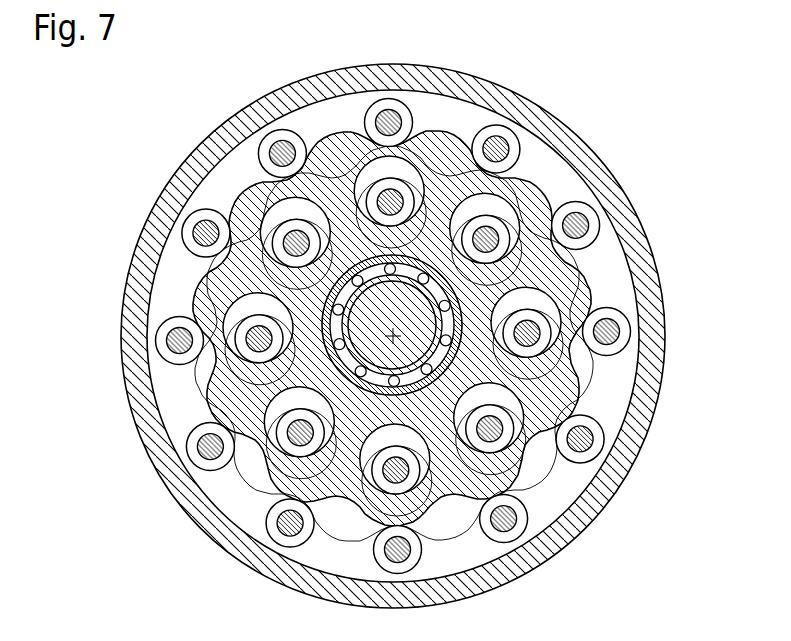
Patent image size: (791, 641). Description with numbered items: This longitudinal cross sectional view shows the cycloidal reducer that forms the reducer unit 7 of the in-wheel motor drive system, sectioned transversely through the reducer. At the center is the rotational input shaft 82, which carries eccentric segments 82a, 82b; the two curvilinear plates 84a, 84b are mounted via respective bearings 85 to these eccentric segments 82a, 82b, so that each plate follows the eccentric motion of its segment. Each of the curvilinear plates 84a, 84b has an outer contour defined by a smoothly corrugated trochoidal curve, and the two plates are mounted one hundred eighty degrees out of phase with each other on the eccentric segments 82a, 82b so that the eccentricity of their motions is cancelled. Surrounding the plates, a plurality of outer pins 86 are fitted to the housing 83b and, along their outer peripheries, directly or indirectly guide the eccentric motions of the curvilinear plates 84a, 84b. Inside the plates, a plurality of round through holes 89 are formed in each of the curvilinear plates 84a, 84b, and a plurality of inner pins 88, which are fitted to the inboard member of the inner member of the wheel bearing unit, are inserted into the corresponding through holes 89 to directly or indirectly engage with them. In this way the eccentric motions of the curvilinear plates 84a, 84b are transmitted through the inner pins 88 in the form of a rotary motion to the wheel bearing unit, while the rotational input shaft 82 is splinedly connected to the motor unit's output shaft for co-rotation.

The reducer unit 7 is at (203, 127).
The rotational input shaft 82 is at (63, 382).
The eccentric segment 82a is at (222, 417).
The eccentric segment 82b is at (333, 357).
The housing 83b is at (172, 198).
The curvilinear plate 84a is at (617, 230).
The curvilinear plate 84b is at (530, 190).
The bearing 85 is at (333, 288).
The outer pin 86 is at (387, 120).
The inner pin 88 is at (485, 238).
The through hole 89 is at (547, 293).